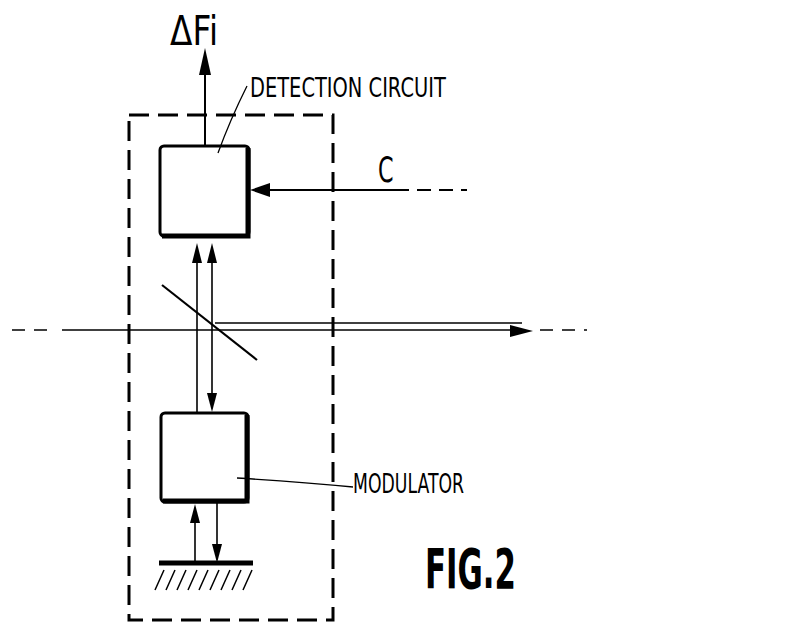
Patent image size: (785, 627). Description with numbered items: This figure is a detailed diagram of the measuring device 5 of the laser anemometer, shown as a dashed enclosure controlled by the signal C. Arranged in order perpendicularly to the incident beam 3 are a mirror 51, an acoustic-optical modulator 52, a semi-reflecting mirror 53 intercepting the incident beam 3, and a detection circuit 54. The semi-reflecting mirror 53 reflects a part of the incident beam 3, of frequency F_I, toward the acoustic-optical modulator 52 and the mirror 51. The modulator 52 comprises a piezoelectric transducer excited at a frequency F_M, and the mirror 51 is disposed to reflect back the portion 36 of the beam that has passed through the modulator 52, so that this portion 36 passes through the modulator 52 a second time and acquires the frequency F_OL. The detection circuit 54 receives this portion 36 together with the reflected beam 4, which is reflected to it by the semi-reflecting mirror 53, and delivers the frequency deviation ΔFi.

The incident beam 3 is at (74, 332).
The reflected beam 4 is at (212, 282).
The measuring device 5 is at (129, 134).
The portion of twice-reflected incident beam 36 is at (197, 353).
The mirror 51 is at (238, 552).
The acoustic-optical modulator 52 is at (220, 463).
The semi-reflecting mirror 53 is at (240, 342).
The detection circuit 54 is at (228, 168).